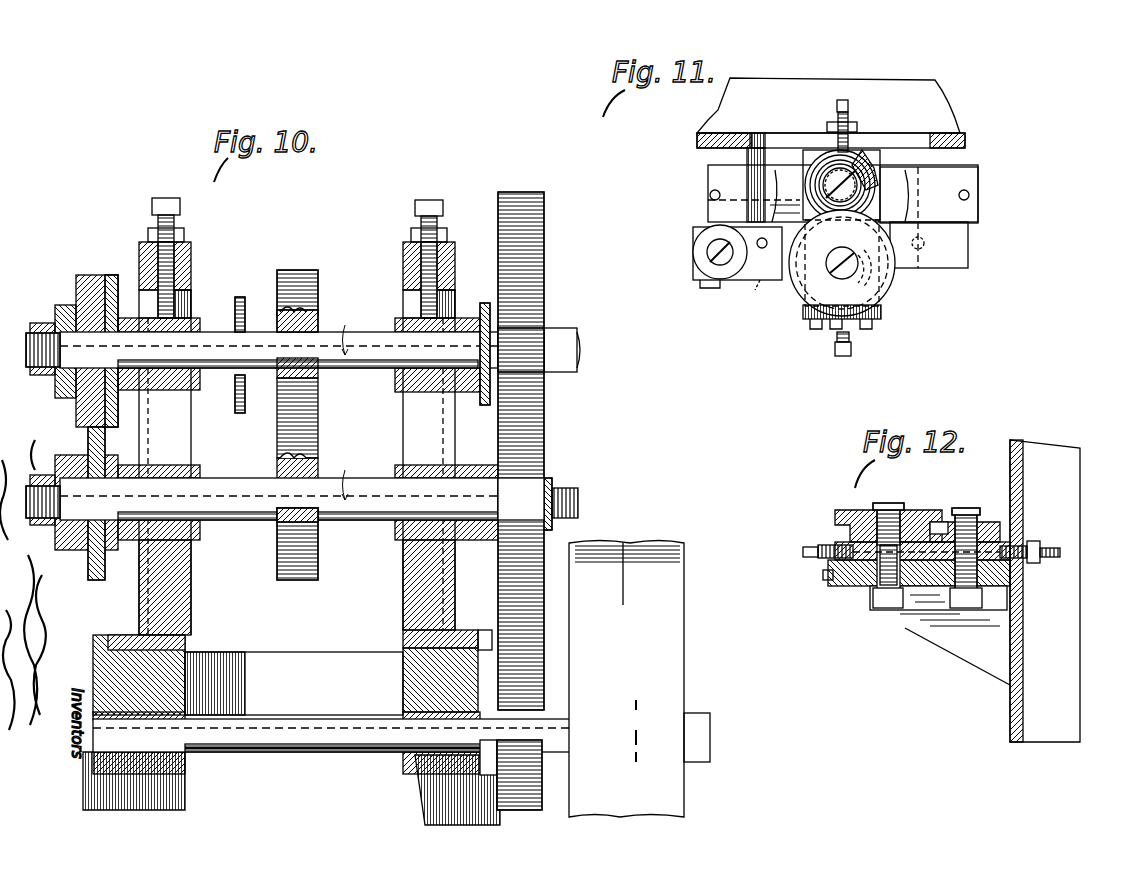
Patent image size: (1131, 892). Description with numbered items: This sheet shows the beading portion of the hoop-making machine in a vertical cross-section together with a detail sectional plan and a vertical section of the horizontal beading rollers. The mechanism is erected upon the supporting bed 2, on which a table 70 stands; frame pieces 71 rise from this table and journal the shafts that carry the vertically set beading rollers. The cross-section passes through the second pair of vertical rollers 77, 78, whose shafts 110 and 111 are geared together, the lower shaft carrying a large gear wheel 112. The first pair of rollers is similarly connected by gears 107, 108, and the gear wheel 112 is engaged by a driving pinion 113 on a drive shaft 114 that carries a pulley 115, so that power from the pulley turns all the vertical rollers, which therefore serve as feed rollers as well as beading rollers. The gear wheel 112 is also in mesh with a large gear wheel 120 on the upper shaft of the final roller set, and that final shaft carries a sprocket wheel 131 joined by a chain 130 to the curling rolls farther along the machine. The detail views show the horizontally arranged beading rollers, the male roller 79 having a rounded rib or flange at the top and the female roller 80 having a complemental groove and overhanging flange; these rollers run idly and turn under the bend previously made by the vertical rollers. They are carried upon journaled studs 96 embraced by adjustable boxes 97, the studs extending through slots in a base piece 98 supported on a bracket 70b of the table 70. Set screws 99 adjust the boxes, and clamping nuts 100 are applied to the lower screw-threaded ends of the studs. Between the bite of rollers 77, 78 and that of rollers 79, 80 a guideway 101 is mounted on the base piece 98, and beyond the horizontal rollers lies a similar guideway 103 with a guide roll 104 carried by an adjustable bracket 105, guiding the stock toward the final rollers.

In FIG. 10, the supporting bed 2 is at (415, 780).
In FIG. 10, the table 70 is at (188, 650).
In FIG. 11, the table 70 is at (965, 142).
In FIG. 12, the table 70 is at (1015, 744).
In FIG. 12, the bracket 70b is at (905, 608).
In FIG. 10, the frame pieces 71 is at (192, 600).
In FIG. 10, the beading roller 77 is at (88, 580).
In FIG. 10, the beading roller 78 is at (76, 283).
In FIG. 11, the male horizontal beading roller 79 is at (858, 177).
In FIG. 12, the male horizontal beading roller 79 is at (1000, 522).
In FIG. 11, the female horizontal beading roller 80 is at (890, 290).
In FIG. 12, the female horizontal beading roller 80 is at (848, 510).
In FIG. 11, the journaled studs 96 is at (830, 275).
In FIG. 12, the journaled studs 96 is at (915, 500).
In FIG. 11, the adjustable boxes 97 is at (882, 187).
In FIG. 12, the adjustable boxes 97 is at (1000, 540).
In FIG. 11, the base piece 98 is at (882, 308).
In FIG. 12, the base piece 98 is at (928, 596).
In FIG. 11, the set screws 99 is at (845, 112).
In FIG. 12, the set screws 99 is at (1062, 553).
In FIG. 12, the clamping nuts 100 is at (885, 600).
In FIG. 11, the guideway 101 is at (968, 190).
In FIG. 11, the guideway 103 is at (745, 200).
In FIG. 11, the guide roll 104 is at (695, 250).
In FIG. 11, the adjustable bracket 105 is at (768, 265).
In FIG. 10, the gear 107 is at (318, 570).
In FIG. 10, the gear 108 is at (312, 290).
In FIG. 10, the shaft 110 is at (364, 478).
In FIG. 10, the shaft 111 is at (378, 378).
In FIG. 10, the gear wheel 112 is at (535, 455).
In FIG. 10, the driving pinion 113 is at (545, 668).
In FIG. 10, the drive shaft 114 is at (370, 753).
In FIG. 10, the pulley 115 is at (684, 543).
In FIG. 10, the gear wheel 120 is at (544, 197).
In FIG. 10, the chain 130 is at (240, 412).
In FIG. 10, the sprocket wheel 131 is at (235, 310).